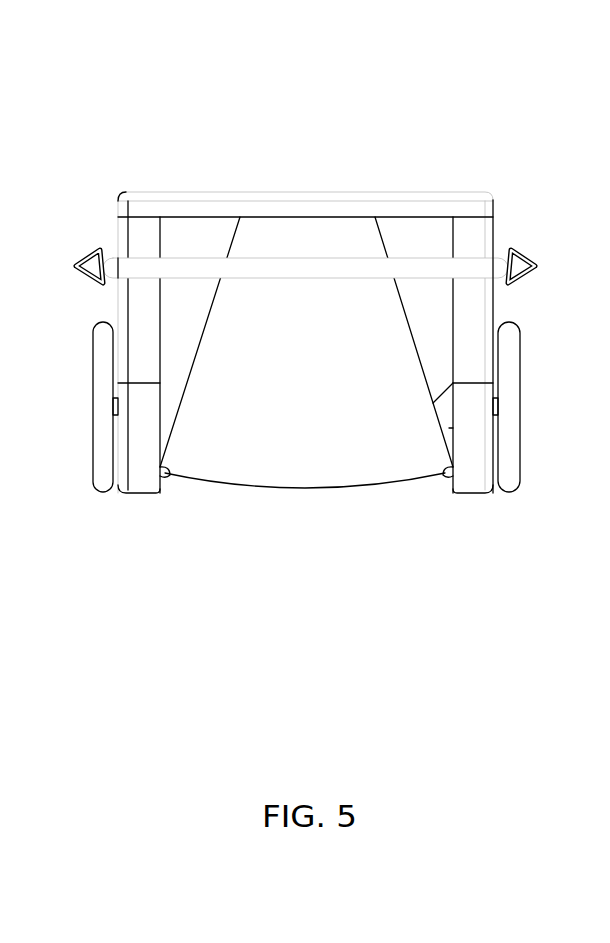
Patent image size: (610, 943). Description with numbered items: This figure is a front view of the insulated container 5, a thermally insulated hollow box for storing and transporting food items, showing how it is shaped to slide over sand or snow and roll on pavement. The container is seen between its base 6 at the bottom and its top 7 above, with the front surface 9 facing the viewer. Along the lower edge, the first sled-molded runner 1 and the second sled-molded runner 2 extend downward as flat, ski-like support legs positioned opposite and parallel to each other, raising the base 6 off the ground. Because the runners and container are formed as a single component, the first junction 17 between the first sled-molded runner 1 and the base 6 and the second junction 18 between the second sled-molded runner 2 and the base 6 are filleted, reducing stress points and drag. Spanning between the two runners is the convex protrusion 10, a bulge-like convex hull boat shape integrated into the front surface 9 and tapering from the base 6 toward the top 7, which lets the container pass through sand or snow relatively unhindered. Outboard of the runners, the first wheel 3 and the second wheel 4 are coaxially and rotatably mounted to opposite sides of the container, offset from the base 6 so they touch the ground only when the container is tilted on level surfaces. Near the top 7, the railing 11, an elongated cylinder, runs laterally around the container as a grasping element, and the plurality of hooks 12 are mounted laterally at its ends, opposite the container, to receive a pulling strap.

The first sled-molded runner 1 is at (457, 489).
The second sled-molded runner 2 is at (141, 489).
The first wheel 3 is at (516, 427).
The second wheel 4 is at (96, 426).
The insulated container 5 is at (311, 350).
The base 6 is at (267, 507).
The top 7 is at (311, 146).
The front surface 9 is at (404, 230).
The convex protrusion 10 is at (312, 494).
The railing 11 is at (428, 276).
The plurality of hooks 12 is at (97, 287).
The first junction 17 is at (440, 481).
The second junction 18 is at (173, 481).